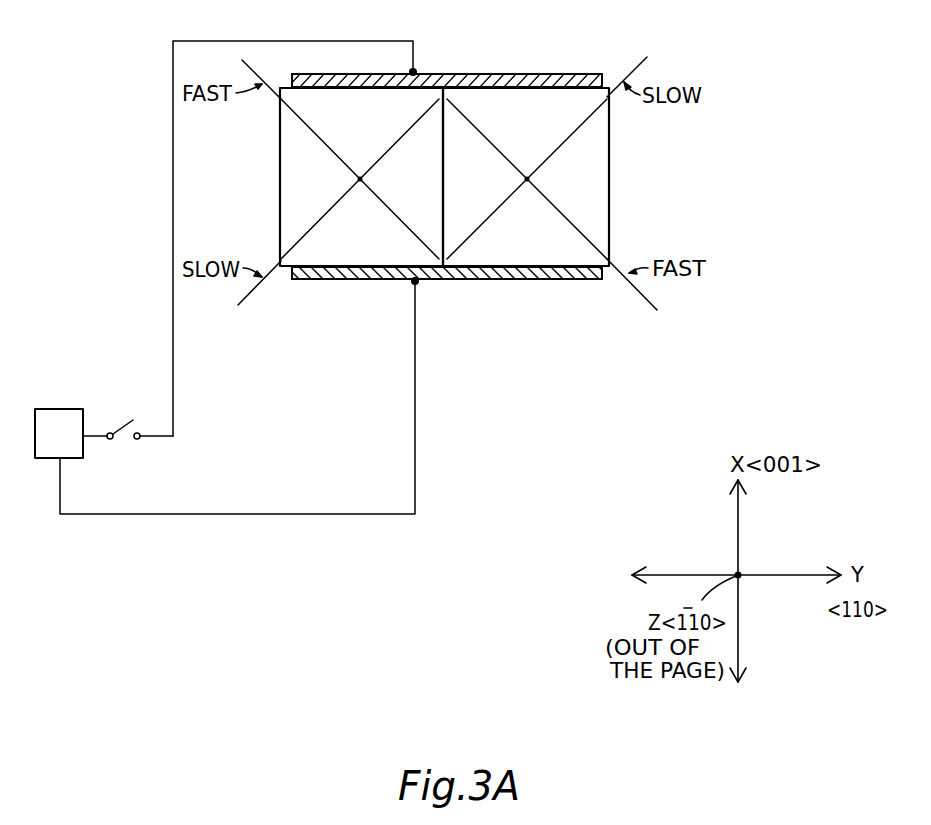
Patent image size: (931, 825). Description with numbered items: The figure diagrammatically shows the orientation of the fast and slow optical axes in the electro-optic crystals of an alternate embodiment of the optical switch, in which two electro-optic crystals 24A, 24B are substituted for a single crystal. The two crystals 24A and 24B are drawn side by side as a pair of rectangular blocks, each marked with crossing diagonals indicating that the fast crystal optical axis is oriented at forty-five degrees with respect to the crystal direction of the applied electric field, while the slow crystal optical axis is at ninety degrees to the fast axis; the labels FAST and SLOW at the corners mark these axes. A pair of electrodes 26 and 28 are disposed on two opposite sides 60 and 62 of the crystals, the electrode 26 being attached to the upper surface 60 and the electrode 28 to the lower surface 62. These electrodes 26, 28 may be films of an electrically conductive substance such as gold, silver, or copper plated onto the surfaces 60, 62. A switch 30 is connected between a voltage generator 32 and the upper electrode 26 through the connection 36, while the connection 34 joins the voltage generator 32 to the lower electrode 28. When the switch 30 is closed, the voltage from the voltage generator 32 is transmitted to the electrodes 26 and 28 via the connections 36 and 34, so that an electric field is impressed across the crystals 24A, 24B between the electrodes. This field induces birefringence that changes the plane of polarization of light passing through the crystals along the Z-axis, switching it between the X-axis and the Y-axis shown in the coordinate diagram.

The electro-optic crystal 24A is at (610, 173).
The electro-optic crystal 24B is at (279, 176).
The electrode 26 is at (486, 72).
The electrode 28 is at (455, 280).
The switch 30 is at (128, 418).
The voltage generator 32 is at (63, 408).
The connection 34 is at (258, 515).
The connection 36 is at (174, 374).
The side of electro-optic crystal 60 is at (521, 73).
The side of electro-optic crystal 62 is at (505, 280).